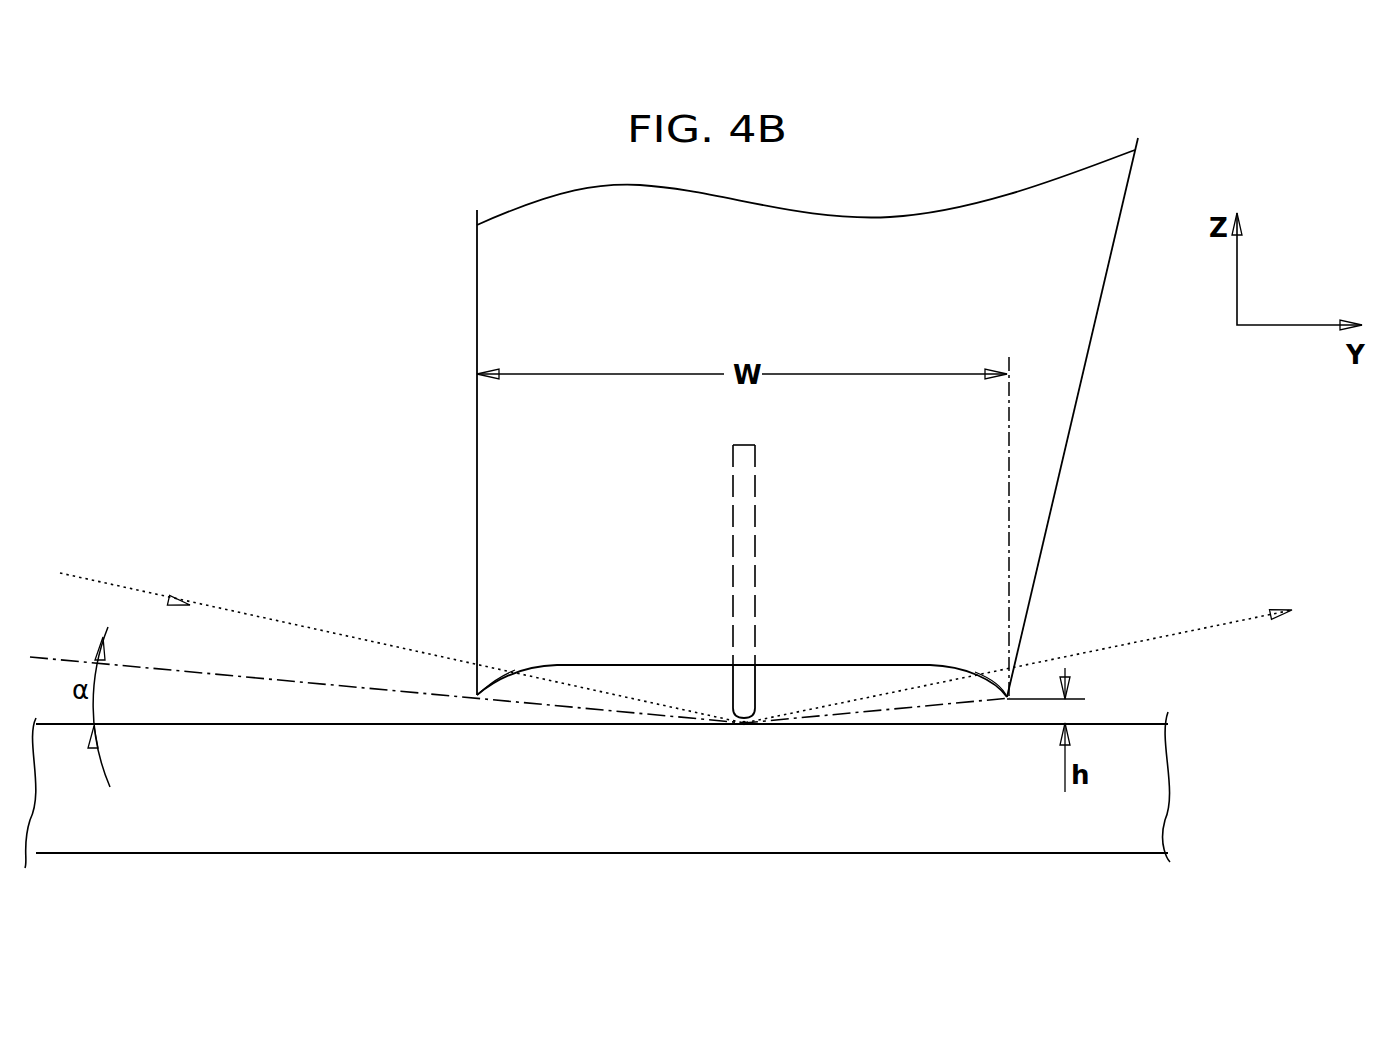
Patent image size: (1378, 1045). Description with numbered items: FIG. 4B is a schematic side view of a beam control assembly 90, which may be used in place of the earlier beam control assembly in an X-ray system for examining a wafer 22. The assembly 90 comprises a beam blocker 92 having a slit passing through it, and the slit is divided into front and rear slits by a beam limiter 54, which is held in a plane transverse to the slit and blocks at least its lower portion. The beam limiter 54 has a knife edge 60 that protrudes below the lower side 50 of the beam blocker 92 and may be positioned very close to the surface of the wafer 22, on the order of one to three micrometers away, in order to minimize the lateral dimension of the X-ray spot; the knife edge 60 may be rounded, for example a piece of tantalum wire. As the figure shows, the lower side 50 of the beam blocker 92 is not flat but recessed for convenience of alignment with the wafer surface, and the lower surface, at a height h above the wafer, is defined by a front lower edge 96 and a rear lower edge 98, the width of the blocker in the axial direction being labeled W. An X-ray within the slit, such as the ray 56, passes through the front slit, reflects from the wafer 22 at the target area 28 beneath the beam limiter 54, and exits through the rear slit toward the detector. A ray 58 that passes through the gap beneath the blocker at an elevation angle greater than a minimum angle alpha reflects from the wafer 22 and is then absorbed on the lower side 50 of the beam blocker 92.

The beam control assembly 90 is at (229, 201).
The beam blocker 92 is at (477, 517).
The front lower edge 96 is at (470, 695).
The rear lower edge 98 is at (1010, 700).
The lower side 50 is at (905, 703).
The beam limiter 54 is at (755, 592).
The knife edge 60 is at (733, 712).
The ray 56 is at (327, 636).
The ray 58 is at (270, 680).
The target area 28 is at (742, 725).
The wafer 22 is at (1145, 793).